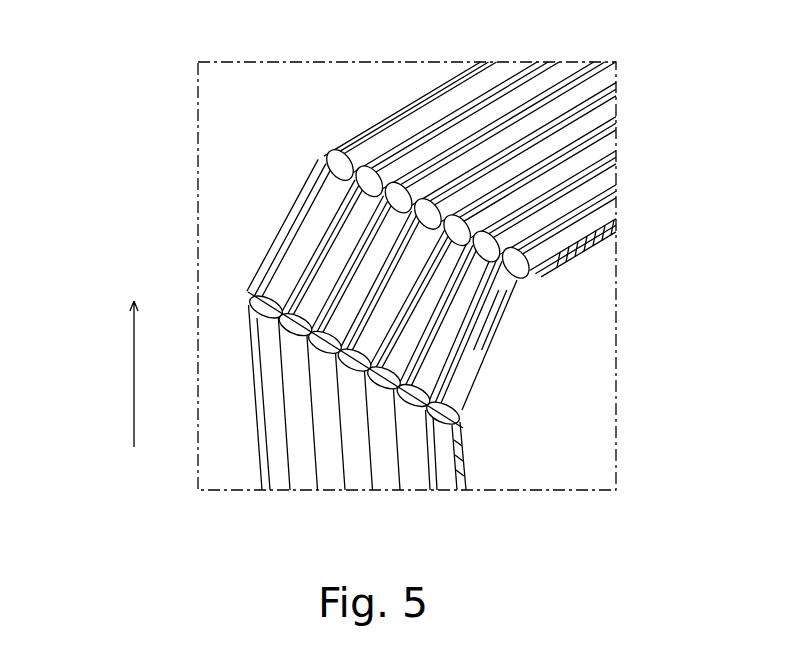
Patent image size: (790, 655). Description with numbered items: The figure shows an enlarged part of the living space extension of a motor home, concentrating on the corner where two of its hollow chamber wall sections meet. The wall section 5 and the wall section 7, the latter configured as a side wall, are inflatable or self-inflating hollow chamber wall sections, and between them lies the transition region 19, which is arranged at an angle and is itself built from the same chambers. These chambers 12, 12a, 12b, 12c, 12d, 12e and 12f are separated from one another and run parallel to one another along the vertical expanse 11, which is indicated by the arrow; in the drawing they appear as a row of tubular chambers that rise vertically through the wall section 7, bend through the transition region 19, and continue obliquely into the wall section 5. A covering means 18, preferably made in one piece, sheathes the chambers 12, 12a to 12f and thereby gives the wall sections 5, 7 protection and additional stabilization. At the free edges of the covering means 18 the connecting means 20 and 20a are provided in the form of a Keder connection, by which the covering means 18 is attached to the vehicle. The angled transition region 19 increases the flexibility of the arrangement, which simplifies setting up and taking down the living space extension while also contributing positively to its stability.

The wall section 5 is at (558, 138).
The wall section 7 is at (332, 438).
The vertical expanse 11 is at (134, 370).
The chamber 12 is at (337, 157).
The chamber 12a is at (372, 175).
The chamber 12b is at (398, 190).
The chamber 12c is at (430, 205).
The chamber 12d is at (460, 228).
The chamber 12e is at (490, 247).
The chamber 12f is at (518, 265).
The covering means 18 is at (314, 375).
The transition region 19 is at (280, 223).
The connecting means 20 is at (472, 490).
The connecting means 20a is at (593, 237).